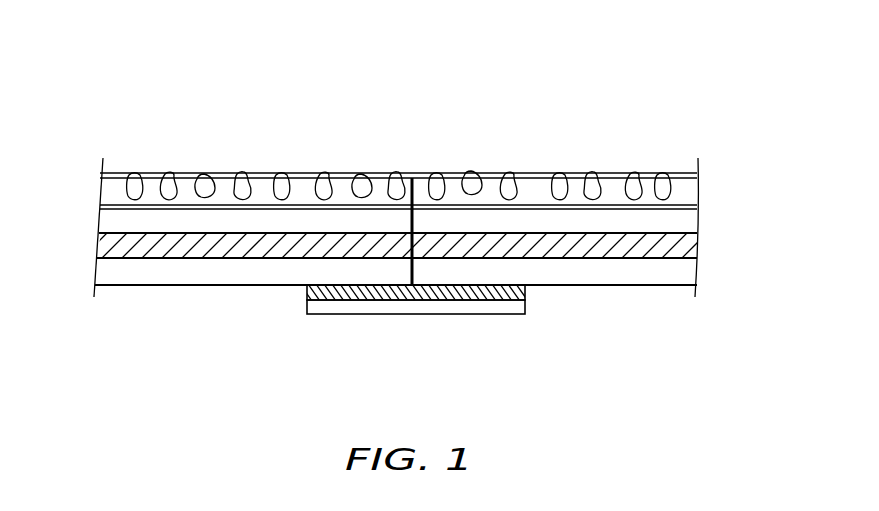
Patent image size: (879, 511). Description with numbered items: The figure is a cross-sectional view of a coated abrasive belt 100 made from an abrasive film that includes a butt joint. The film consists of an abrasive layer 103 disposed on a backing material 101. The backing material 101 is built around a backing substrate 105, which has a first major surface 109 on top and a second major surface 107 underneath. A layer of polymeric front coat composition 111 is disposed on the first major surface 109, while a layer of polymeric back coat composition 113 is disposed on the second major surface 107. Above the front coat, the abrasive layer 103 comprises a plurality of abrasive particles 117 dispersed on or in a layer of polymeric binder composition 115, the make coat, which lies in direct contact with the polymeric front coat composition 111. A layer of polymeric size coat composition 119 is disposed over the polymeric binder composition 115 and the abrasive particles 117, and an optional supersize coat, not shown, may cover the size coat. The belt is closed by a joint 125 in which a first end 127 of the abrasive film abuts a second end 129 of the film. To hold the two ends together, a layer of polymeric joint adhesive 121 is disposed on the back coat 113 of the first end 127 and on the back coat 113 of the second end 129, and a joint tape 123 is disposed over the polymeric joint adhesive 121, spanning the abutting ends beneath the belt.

The coated abrasive belt 100 is at (733, 40).
The backing material 101 is at (716, 212).
The abrasive layer 103 is at (716, 174).
The backing substrate 105 is at (102, 250).
The second major surface 107 is at (600, 260).
The first major surface 109 is at (602, 233).
The polymeric front coat composition 111 is at (107, 222).
The polymeric back coat composition 113 is at (107, 270).
The polymeric binder composition 115 is at (187, 187).
The abrasive particles 117 is at (562, 172).
The polymeric size coat composition 119 is at (120, 172).
The polymeric joint adhesive 121 is at (307, 290).
The joint tape 123 is at (307, 305).
The joint 125 is at (410, 177).
The first end 127 is at (448, 154).
The second end 129 is at (395, 155).